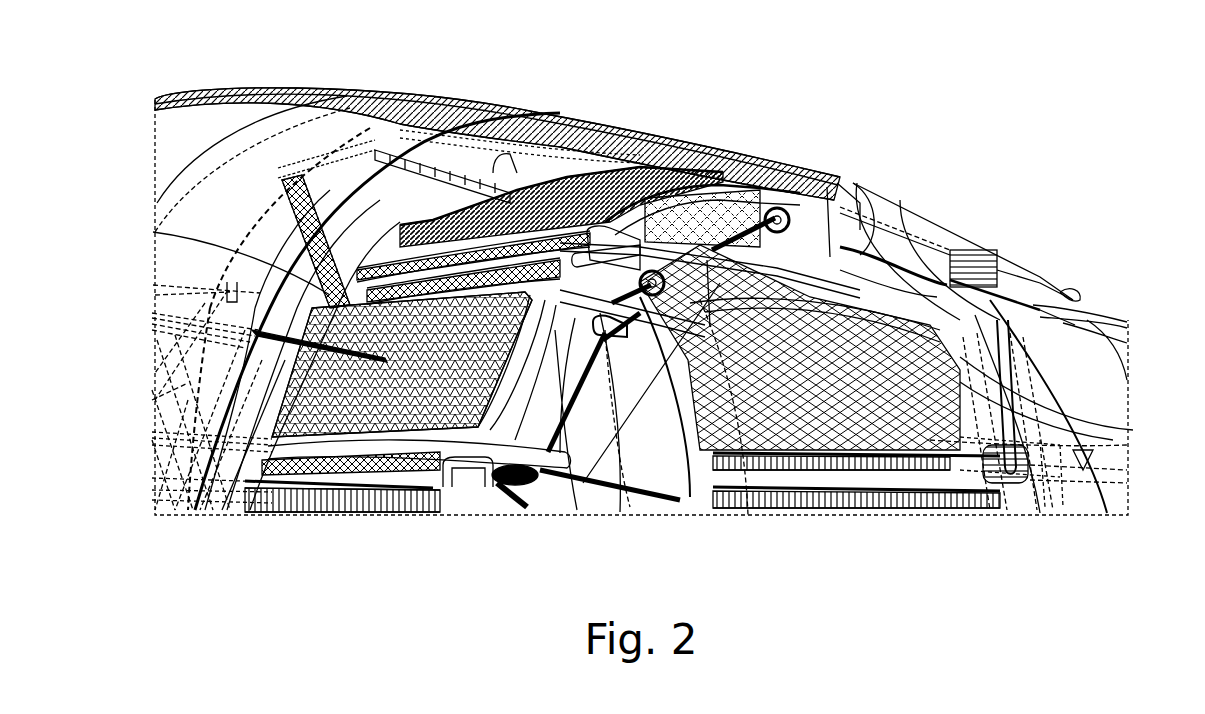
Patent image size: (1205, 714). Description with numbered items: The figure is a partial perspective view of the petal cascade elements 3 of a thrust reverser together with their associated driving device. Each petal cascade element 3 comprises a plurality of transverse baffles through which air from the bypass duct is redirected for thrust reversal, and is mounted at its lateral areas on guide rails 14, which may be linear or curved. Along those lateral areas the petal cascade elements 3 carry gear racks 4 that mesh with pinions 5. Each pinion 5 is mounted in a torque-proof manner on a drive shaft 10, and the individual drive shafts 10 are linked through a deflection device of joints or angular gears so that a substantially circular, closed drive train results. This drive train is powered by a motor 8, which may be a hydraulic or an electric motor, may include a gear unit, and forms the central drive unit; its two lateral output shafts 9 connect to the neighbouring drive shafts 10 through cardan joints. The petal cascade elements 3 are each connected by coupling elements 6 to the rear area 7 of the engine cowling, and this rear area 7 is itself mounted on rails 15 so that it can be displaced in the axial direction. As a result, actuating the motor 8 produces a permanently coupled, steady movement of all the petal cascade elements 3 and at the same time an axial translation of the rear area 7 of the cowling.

The petal cascade element 3 is at (588, 175).
The gear rack 4 is at (703, 165).
The pinion 5 is at (822, 192).
The coupling element 6 is at (462, 150).
The rear area of the engine cowling 7 is at (232, 130).
The motor 8 is at (860, 187).
The output shaft 9 is at (890, 197).
The drive shaft 10 is at (777, 205).
The guide rail 14 is at (968, 243).
The rail 15 is at (560, 125).